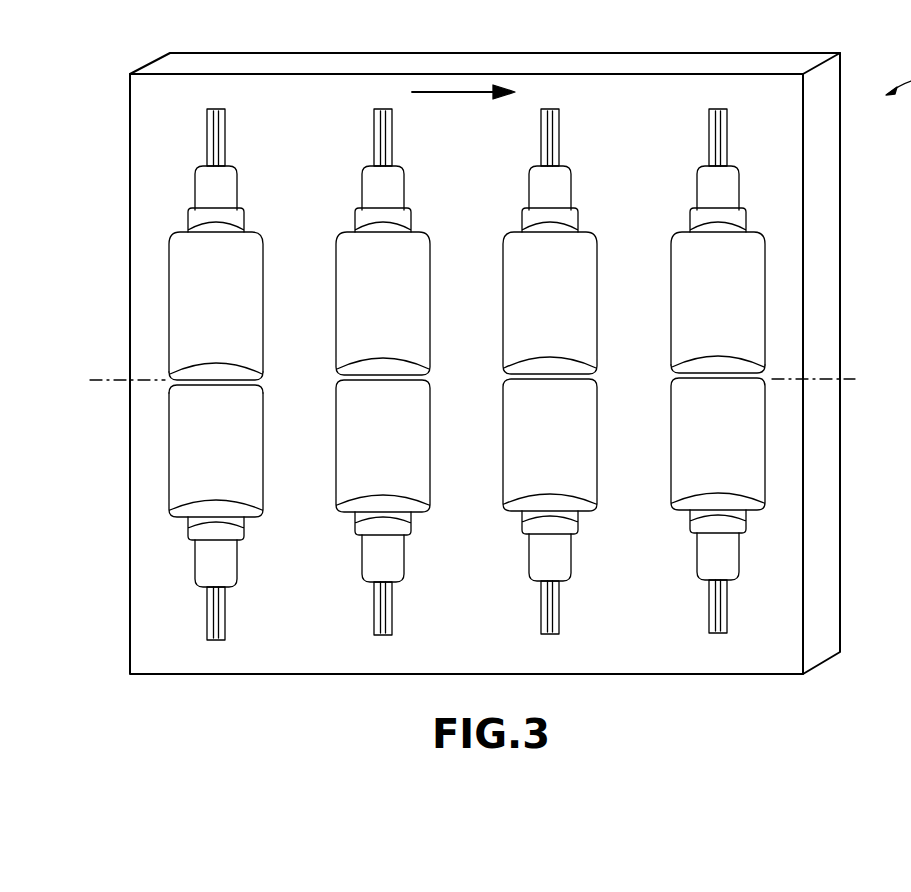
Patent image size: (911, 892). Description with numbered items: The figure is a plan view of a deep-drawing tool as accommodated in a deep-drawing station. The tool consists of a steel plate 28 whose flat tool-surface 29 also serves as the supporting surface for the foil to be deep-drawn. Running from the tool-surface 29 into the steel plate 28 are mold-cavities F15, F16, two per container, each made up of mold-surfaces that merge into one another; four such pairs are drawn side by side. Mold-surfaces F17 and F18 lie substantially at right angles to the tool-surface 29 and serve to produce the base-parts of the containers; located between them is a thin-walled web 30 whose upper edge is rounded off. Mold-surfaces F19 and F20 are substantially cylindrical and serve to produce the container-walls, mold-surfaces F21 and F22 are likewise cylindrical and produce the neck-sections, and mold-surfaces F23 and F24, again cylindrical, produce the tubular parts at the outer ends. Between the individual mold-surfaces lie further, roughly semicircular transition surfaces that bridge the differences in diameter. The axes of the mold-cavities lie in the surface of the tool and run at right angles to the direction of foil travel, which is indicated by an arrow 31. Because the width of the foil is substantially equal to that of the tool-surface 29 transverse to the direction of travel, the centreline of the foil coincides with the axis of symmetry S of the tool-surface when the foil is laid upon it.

The mold-cavity F15 is at (168, 466).
The mold-cavity F16 is at (168, 270).
The mold-surface F17 is at (204, 389).
The mold-surface F18 is at (203, 372).
The mold-surface F19 is at (743, 458).
The mold-surface F20 is at (742, 271).
The mold-surface F21 is at (205, 563).
The mold-surface F22 is at (205, 184).
The mold-surface F23 is at (215, 613).
The mold-surface F24 is at (212, 118).
The steel plate 28 is at (822, 556).
The tool-surface 29 is at (783, 157).
The thin-walled web 30 is at (730, 373).
The arrow 31 is at (467, 94).
The axis of symmetry S is at (471, 380).